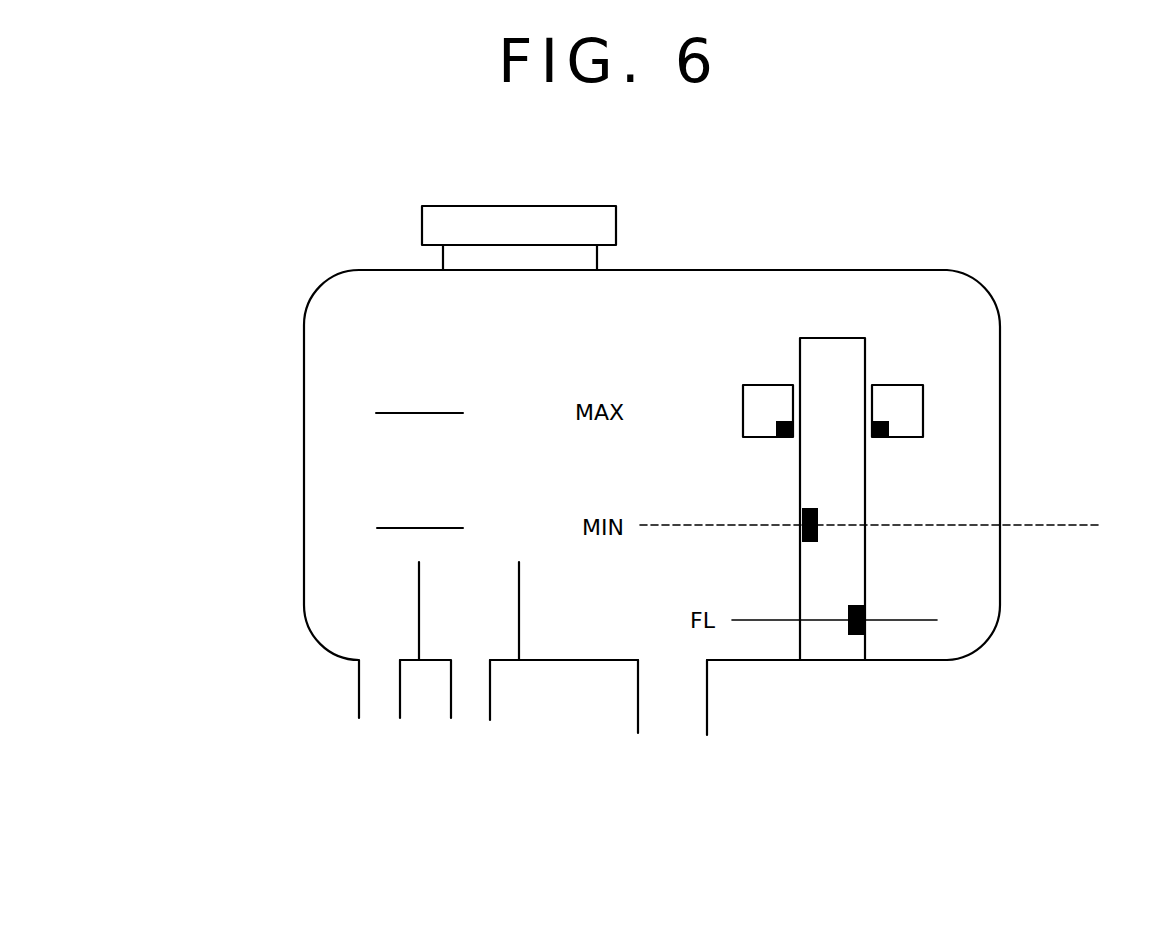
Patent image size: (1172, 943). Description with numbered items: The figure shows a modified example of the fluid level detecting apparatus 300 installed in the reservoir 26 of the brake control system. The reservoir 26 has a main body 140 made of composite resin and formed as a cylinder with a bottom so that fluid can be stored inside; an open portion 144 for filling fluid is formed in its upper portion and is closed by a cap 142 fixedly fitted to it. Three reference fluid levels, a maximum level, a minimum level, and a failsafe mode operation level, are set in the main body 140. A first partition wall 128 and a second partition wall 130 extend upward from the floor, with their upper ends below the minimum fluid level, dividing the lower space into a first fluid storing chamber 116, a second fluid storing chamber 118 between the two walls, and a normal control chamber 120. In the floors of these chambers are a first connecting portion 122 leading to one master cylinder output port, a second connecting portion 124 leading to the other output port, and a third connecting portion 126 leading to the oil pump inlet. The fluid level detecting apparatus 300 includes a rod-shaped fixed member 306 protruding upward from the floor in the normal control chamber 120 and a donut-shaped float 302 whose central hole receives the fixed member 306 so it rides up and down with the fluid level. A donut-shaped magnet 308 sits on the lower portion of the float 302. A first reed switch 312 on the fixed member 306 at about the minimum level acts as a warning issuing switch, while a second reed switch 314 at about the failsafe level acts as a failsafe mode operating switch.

The reservoir 26 is at (890, 210).
The first fluid storing chamber 116 is at (313, 587).
The second fluid storing chamber 118 is at (438, 645).
The normal control chamber 120 is at (587, 630).
The first connecting portion 122 is at (352, 692).
The second connecting portion 124 is at (494, 689).
The third connecting portion 126 is at (638, 700).
The first partition wall 128 is at (419, 610).
The second partition wall 130 is at (519, 610).
The main body 140 is at (304, 337).
The cap 142 is at (520, 206).
The open portion 144 is at (430, 259).
The fluid level detecting apparatus 300 is at (962, 373).
The float 302 is at (923, 407).
The fixed member 306 is at (865, 482).
The magnet 308 is at (882, 438).
The first reed switch 312 is at (818, 537).
The second reed switch 314 is at (865, 610).